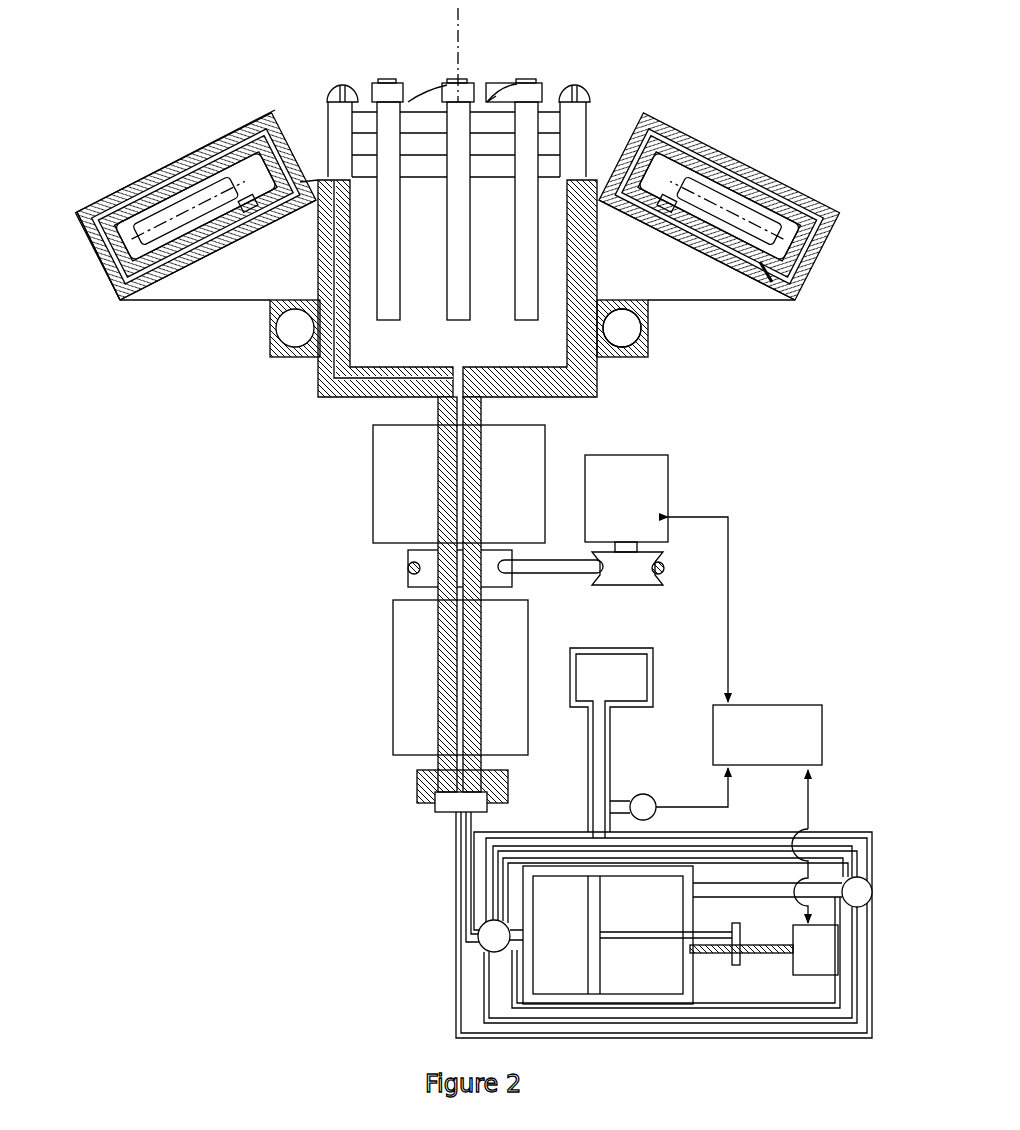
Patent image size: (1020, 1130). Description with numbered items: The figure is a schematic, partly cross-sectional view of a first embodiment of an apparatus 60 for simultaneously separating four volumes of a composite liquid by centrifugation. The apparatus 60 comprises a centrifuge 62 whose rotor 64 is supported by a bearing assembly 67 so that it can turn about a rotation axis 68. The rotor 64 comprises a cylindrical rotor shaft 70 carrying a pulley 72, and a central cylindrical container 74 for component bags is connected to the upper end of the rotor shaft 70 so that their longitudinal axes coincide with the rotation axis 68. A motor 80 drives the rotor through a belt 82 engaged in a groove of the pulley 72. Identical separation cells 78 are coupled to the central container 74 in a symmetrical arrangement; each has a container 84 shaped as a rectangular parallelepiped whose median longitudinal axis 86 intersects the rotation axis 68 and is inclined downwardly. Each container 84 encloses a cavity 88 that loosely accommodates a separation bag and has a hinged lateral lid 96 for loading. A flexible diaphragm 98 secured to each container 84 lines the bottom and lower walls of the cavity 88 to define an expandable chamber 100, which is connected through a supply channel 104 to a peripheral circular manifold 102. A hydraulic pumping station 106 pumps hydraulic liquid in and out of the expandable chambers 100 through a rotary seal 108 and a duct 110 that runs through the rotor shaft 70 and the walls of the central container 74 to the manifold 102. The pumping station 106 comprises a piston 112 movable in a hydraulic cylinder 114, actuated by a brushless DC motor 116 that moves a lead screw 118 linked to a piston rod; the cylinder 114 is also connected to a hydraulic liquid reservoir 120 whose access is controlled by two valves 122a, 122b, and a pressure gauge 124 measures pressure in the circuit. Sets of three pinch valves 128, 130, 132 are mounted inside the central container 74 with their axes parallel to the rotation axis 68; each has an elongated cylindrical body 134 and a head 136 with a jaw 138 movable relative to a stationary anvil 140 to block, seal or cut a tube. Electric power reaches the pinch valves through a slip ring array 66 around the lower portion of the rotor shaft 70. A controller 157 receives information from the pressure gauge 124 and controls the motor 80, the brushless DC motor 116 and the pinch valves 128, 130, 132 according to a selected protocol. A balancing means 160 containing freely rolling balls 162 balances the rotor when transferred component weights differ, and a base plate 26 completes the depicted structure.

The base plate 26 is at (260, 305).
The apparatus 60 is at (292, 668).
The centrifuge 62 is at (682, 114).
The rotor 64 is at (292, 384).
The slip ring array 66 is at (393, 676).
The bearing assembly 67 is at (372, 465).
The rotation axis 68 is at (456, 38).
The rotor shaft 70 is at (440, 766).
The pulley 72 is at (410, 582).
The central cylindrical container 74 is at (437, 281).
The separation cell 78 is at (110, 162).
The motor 80 is at (673, 487).
The belt 82 is at (532, 582).
The container 84 is at (162, 152).
The median longitudinal axis 86 is at (95, 255).
The cavity 88 is at (135, 207).
The hinged lateral lid 96 is at (216, 132).
The flexible diaphragm 98 is at (205, 215).
The expandable chamber 100 is at (800, 241).
The peripheral circular manifold 102 is at (765, 282).
The supply channel 104 is at (160, 265).
The hydraulic pumping station 106 is at (518, 962).
The rotary seal 108 is at (430, 830).
The duct 110 is at (360, 400).
The piston 112 is at (588, 930).
The hydraulic cylinder 114 is at (698, 985).
The brushless DC motor 116 is at (826, 976).
The lead screw 118 is at (760, 944).
The hydraulic liquid reservoir 120 is at (656, 660).
The valve 122a is at (484, 950).
The valve 122b is at (849, 878).
The pressure gauge 124 is at (651, 794).
The pinch valve 128 is at (385, 86).
The pinch valve 130 is at (340, 100).
The pinch valve 132 is at (531, 86).
The elongated cylindrical body 134 is at (390, 322).
The head 136 is at (520, 88).
The jaw 138 is at (492, 100).
The anvil 140 is at (553, 107).
The controller 157 is at (776, 705).
The balancing means 160 is at (652, 332).
The balls 162 is at (628, 336).